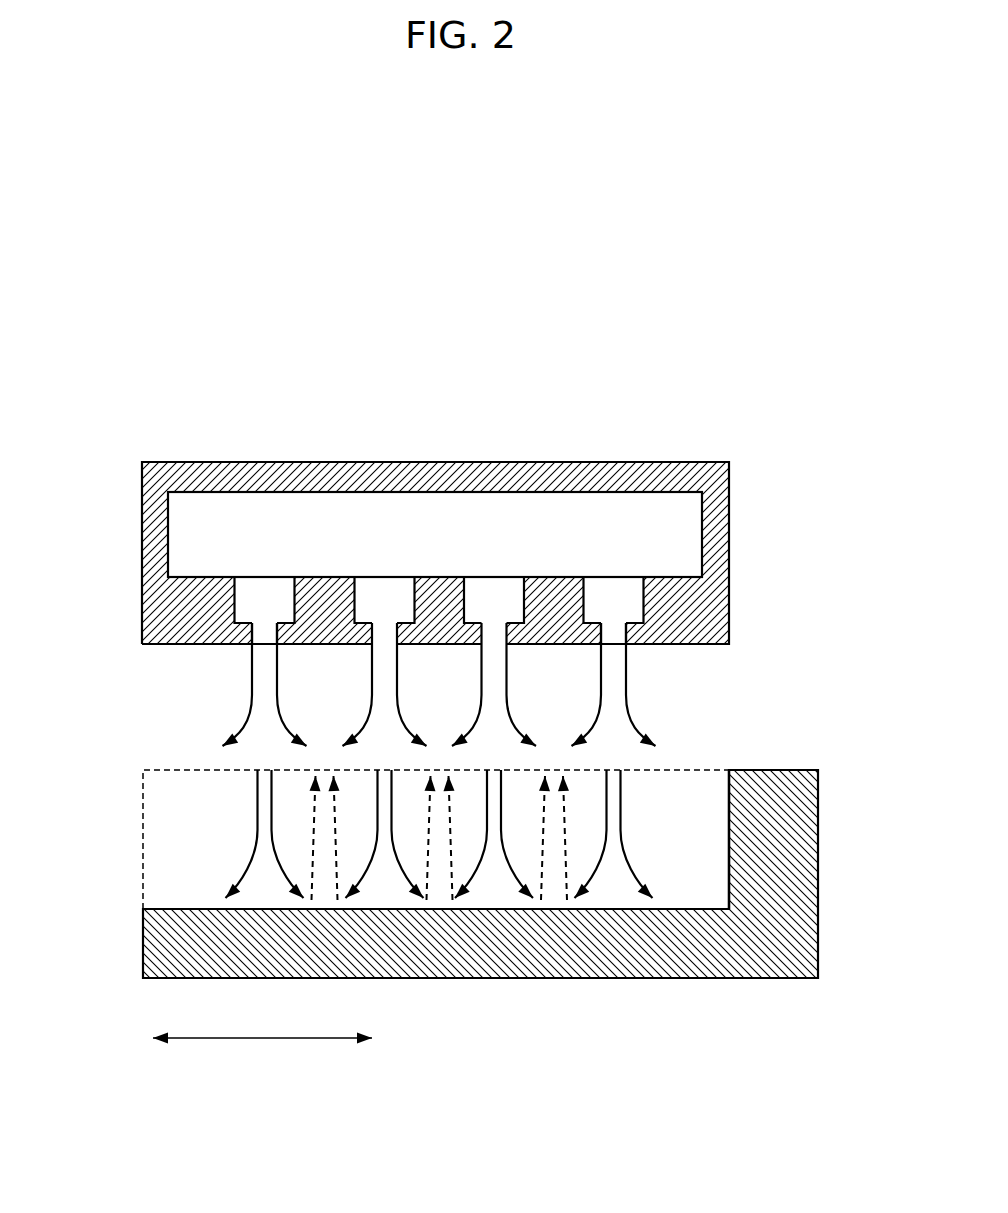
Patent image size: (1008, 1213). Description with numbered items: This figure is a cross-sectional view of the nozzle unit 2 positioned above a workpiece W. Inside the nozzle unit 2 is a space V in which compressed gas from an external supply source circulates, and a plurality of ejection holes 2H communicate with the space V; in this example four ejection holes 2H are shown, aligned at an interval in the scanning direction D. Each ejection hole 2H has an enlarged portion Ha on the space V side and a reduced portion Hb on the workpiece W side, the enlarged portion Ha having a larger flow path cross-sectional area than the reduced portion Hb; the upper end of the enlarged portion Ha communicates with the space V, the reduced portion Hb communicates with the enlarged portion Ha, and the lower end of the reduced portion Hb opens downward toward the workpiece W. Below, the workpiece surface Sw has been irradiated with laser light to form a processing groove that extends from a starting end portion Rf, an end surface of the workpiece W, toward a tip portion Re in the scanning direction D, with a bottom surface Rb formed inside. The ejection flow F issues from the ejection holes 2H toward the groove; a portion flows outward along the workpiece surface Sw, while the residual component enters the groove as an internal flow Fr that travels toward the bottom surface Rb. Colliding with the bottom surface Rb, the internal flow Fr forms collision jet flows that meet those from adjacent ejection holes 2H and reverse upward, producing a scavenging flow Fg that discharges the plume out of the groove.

The nozzle unit 2 is at (95, 410).
The space V is at (305, 510).
The enlarged portion Ha is at (637, 595).
The reduced portion Hb is at (623, 633).
The ejection hole 2H is at (250, 646).
The ejection flow F is at (439, 695).
The internal flow Fr is at (439, 834).
The scavenging flow Fg is at (425, 838).
The workpiece surface Sw is at (790, 770).
The tip portion Re is at (730, 826).
The starting end portion Rf is at (143, 908).
The workpiece W is at (783, 922).
The bottom surface Rb is at (709, 900).
The scanning direction D is at (262, 1057).